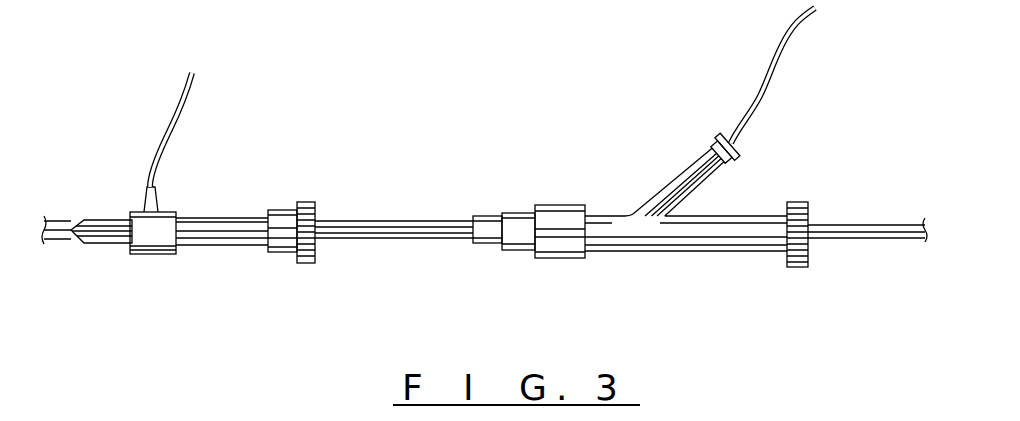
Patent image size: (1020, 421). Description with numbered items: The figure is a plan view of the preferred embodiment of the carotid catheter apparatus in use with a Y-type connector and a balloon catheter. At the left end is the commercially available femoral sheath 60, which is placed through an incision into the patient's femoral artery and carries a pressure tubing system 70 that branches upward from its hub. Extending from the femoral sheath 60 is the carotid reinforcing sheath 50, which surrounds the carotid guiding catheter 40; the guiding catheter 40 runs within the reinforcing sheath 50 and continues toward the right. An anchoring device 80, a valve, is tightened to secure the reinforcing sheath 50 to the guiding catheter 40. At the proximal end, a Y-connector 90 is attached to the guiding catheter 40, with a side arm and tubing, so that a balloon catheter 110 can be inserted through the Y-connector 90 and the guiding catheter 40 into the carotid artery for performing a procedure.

The carotid guiding catheter 40 is at (417, 238).
The carotid reinforcing sheath 50 is at (240, 215).
The femoral sheath 60 is at (102, 245).
The pressure tubing system 70 is at (188, 100).
The anchoring device 80 is at (280, 252).
The Y-connector 90 is at (655, 251).
The balloon catheter 110 is at (810, 222).